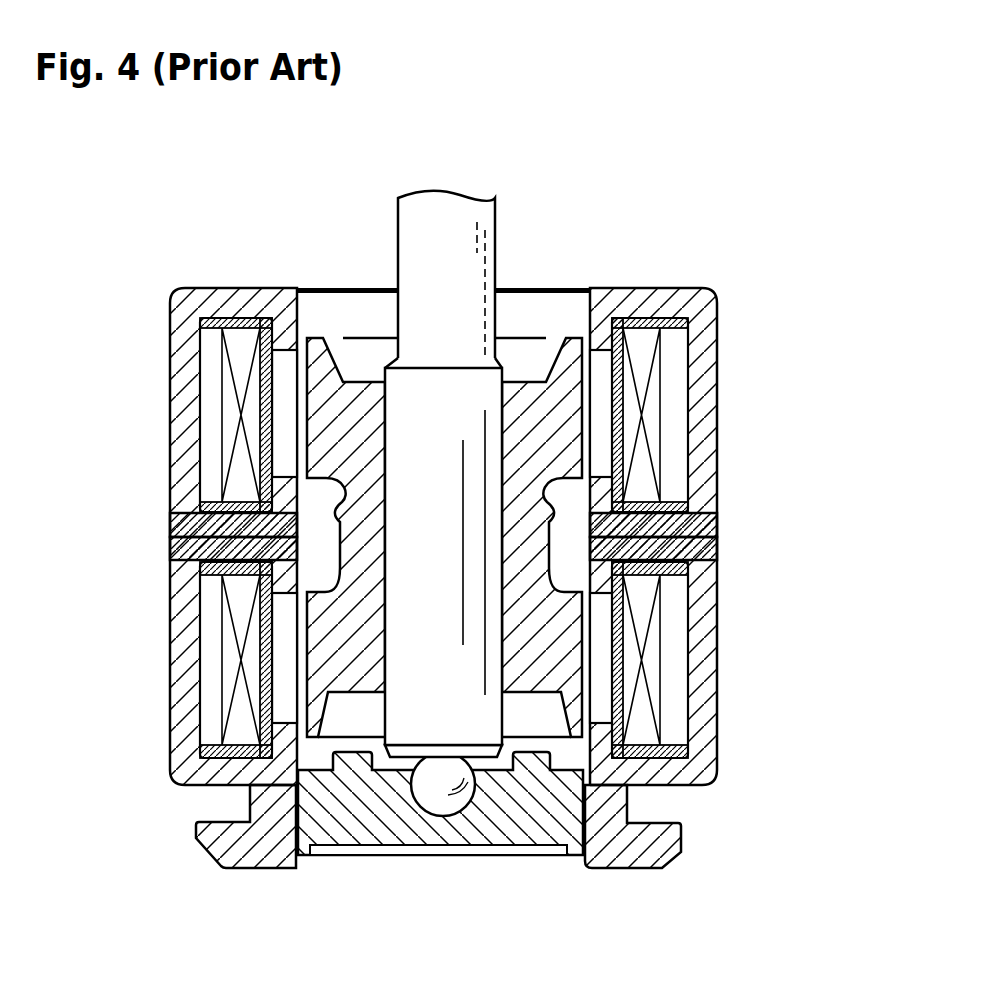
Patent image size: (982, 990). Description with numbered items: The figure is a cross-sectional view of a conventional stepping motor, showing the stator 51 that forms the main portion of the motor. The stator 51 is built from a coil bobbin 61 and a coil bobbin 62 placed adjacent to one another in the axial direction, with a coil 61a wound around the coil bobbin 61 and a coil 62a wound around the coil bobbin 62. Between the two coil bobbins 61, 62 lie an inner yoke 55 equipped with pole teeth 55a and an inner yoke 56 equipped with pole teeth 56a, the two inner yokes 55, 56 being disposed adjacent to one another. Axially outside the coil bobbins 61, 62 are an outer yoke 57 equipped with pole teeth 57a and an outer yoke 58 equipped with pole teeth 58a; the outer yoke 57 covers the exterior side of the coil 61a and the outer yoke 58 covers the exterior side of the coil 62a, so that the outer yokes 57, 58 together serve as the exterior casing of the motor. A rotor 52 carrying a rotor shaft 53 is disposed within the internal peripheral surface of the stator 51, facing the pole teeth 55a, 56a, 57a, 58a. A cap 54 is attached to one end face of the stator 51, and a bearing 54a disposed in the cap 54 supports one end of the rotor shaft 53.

The stator 51 is at (815, 493).
The rotor 52 is at (355, 673).
The rotor shaft 53 is at (500, 232).
The cap 54 is at (627, 867).
The bearing 54a is at (517, 820).
The inner yoke 55 is at (203, 523).
The pole teeth 55a is at (285, 368).
The inner yoke 56 is at (213, 552).
The pole teeth 56a is at (603, 635).
The outer yoke 57 is at (239, 300).
The pole teeth 57a is at (600, 420).
The outer yoke 58 is at (183, 775).
The pole teeth 58a is at (282, 640).
The coil bobbin 61 is at (693, 337).
The coil 61a is at (657, 392).
The coil bobbin 62 is at (690, 730).
The coil 62a is at (655, 655).